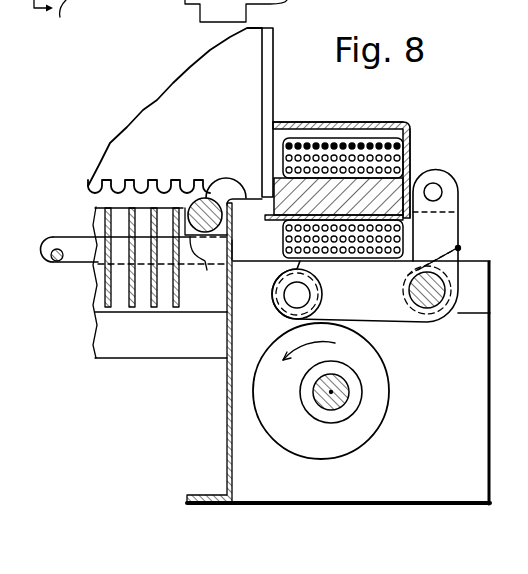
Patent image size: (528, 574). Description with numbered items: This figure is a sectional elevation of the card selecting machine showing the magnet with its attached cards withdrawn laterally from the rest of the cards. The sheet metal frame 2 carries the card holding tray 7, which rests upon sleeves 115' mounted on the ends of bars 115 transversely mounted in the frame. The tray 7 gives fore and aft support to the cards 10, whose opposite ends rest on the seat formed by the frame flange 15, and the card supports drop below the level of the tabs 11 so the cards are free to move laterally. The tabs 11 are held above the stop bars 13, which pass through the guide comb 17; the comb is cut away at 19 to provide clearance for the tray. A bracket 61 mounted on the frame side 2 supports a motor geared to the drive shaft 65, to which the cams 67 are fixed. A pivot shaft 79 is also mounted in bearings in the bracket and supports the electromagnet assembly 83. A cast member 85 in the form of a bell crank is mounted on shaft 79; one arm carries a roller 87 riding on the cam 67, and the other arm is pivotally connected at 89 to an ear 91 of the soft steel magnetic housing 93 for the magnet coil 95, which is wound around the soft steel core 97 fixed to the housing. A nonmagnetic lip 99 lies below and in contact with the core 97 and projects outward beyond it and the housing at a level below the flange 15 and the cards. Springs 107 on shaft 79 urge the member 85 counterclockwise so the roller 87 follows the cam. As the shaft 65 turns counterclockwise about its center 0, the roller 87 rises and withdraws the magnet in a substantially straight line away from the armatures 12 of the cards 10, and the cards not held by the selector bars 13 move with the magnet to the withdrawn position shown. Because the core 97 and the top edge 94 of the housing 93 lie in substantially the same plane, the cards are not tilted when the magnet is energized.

The frame 2 is at (226, 393).
The card holding tray 7 is at (210, 188).
The cards 10 is at (182, 88).
The tabs 11 is at (90, 185).
The armatures 12 is at (274, 62).
The stop bars 13 is at (108, 307).
The frame flange 15 is at (247, 190).
The guide comb 17 is at (200, 307).
The cut-away clearance 19 is at (194, 265).
The bracket 61 is at (463, 402).
The drive shaft 65 is at (337, 410).
The cams 67 is at (366, 437).
The pivot shaft 79 is at (437, 314).
The electromagnet assembly 83 is at (412, 120).
The cast member 85 is at (458, 214).
The roller 87 is at (272, 292).
The pivotal connection 89 is at (442, 191).
The ear 91 is at (412, 172).
The magnetic housing 93 is at (412, 133).
The top edge of housing 94 is at (306, 104).
The magnet coil 95 is at (336, 150).
The core 97 is at (405, 165).
The nonmagnetic lip 99 is at (268, 219).
The springs 107 is at (460, 247).
The bars 115 is at (128, 238).
The sleeves 115' is at (254, 249).
The wheel axis 0 is at (330, 417).